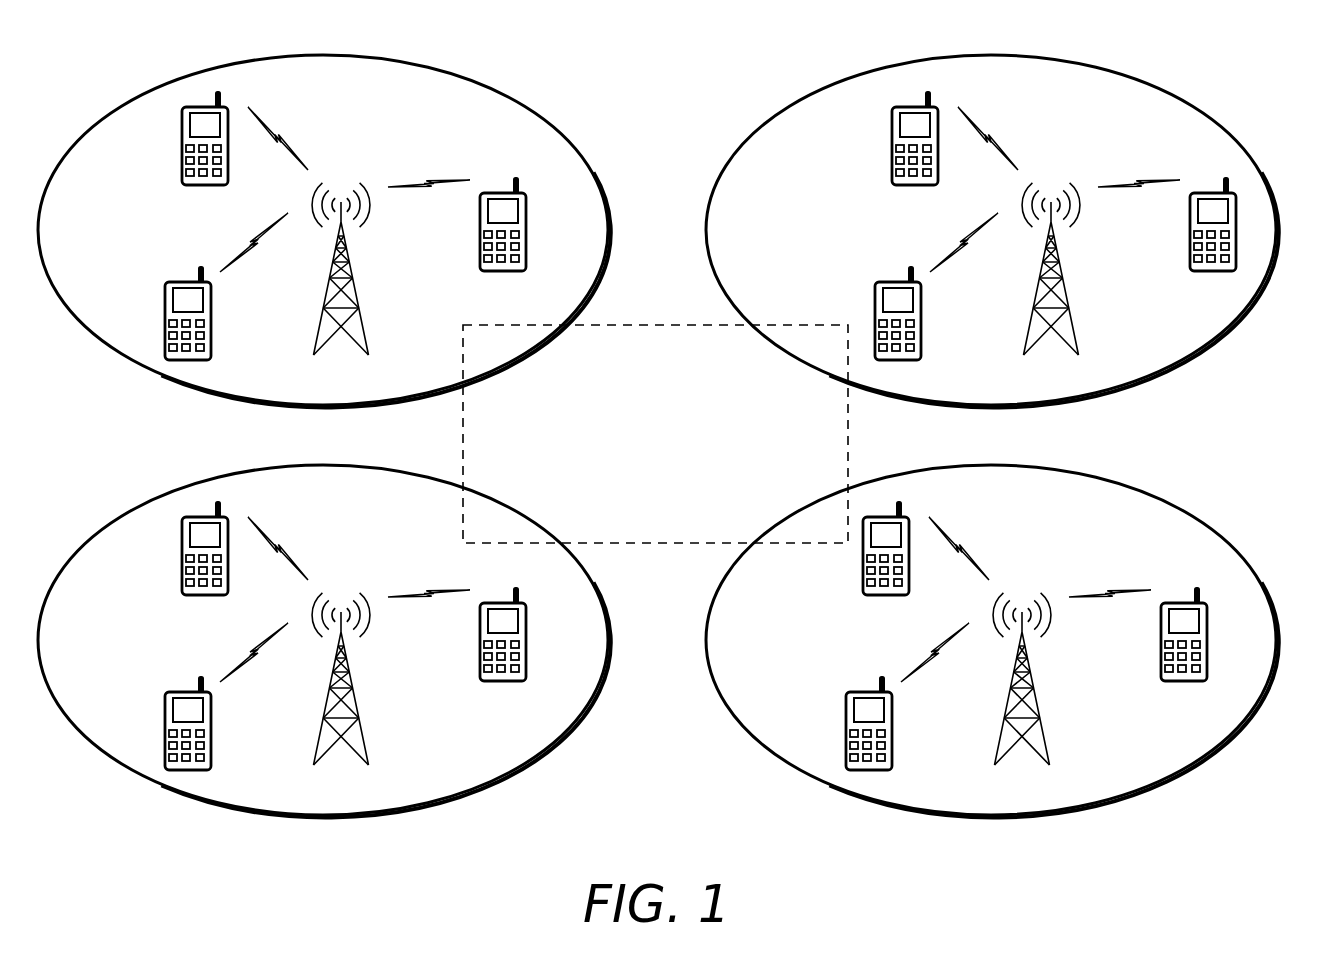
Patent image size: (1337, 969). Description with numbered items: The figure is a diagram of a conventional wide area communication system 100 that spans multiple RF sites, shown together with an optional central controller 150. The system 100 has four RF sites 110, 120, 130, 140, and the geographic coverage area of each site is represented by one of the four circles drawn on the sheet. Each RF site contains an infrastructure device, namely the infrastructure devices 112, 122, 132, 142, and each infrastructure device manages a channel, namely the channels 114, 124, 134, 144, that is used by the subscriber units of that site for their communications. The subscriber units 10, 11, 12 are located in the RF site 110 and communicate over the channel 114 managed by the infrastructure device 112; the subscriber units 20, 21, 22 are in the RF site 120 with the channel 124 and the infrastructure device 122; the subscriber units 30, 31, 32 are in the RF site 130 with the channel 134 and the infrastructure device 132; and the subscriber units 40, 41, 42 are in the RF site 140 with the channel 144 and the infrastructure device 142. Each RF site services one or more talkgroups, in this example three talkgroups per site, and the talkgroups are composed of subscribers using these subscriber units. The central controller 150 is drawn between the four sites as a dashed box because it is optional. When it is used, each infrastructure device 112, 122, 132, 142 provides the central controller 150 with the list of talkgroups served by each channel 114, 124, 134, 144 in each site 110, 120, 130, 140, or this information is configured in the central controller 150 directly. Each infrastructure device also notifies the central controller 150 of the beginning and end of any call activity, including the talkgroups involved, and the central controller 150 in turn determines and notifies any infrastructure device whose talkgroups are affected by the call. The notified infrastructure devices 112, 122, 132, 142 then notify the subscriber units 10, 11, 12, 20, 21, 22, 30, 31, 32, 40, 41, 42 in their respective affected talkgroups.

The wide area communication system 100 is at (1330, 55).
The RF site 110 is at (317, 54).
The RF site 120 is at (985, 54).
The RF site 130 is at (317, 464).
The RF site 140 is at (1010, 464).
The infrastructure device 112 is at (356, 292).
The infrastructure device 122 is at (1076, 269).
The infrastructure device 132 is at (366, 679).
The infrastructure device 142 is at (1047, 679).
The channel 114 is at (280, 133).
The channel 124 is at (1002, 136).
The channel 134 is at (291, 545).
The channel 144 is at (973, 545).
The subscriber unit 10 is at (182, 162).
The subscriber unit 11 is at (165, 305).
The subscriber unit 12 is at (480, 233).
The subscriber unit 20 is at (886, 138).
The subscriber unit 21 is at (871, 313).
The subscriber unit 22 is at (1186, 224).
The subscriber unit 30 is at (176, 548).
The subscriber unit 31 is at (161, 723).
The subscriber unit 32 is at (475, 634).
The subscriber unit 40 is at (855, 548).
The subscriber unit 41 is at (842, 723).
The subscriber unit 42 is at (1155, 634).
The central controller 150 is at (655, 325).